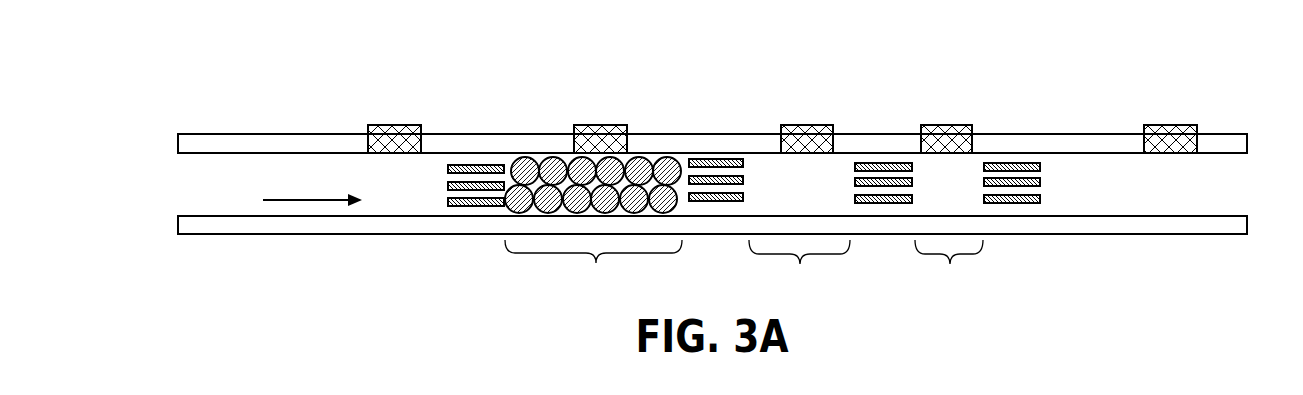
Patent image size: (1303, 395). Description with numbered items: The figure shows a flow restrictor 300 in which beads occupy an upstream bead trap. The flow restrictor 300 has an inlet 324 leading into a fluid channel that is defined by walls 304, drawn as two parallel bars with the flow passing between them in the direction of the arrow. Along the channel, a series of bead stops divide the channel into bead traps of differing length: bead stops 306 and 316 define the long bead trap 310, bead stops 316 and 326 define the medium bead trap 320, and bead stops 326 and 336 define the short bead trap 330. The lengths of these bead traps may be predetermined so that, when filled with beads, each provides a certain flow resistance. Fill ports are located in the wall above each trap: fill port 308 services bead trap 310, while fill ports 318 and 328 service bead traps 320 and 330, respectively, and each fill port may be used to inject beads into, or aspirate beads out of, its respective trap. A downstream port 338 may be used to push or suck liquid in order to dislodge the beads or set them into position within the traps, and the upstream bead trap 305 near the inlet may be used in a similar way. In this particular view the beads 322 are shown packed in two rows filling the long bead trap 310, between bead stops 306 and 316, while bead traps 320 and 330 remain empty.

The flow restrictor 300 is at (208, 94).
The walls 304 is at (288, 146).
The upstream bead trap 305 is at (395, 130).
The bead stop 306 is at (474, 183).
The fill port 308 is at (600, 130).
The bead trap 310 is at (593, 268).
The bead stop 316 is at (702, 182).
The fill port 318 is at (806, 130).
The bead trap 320 is at (799, 268).
The particles 322 is at (670, 203).
The inlet 324 is at (190, 188).
The bead stop 326 is at (871, 182).
The fill port 328 is at (945, 130).
The bead trap 330 is at (949, 268).
The bead stop 336 is at (1006, 182).
The downstream port 338 is at (1170, 130).